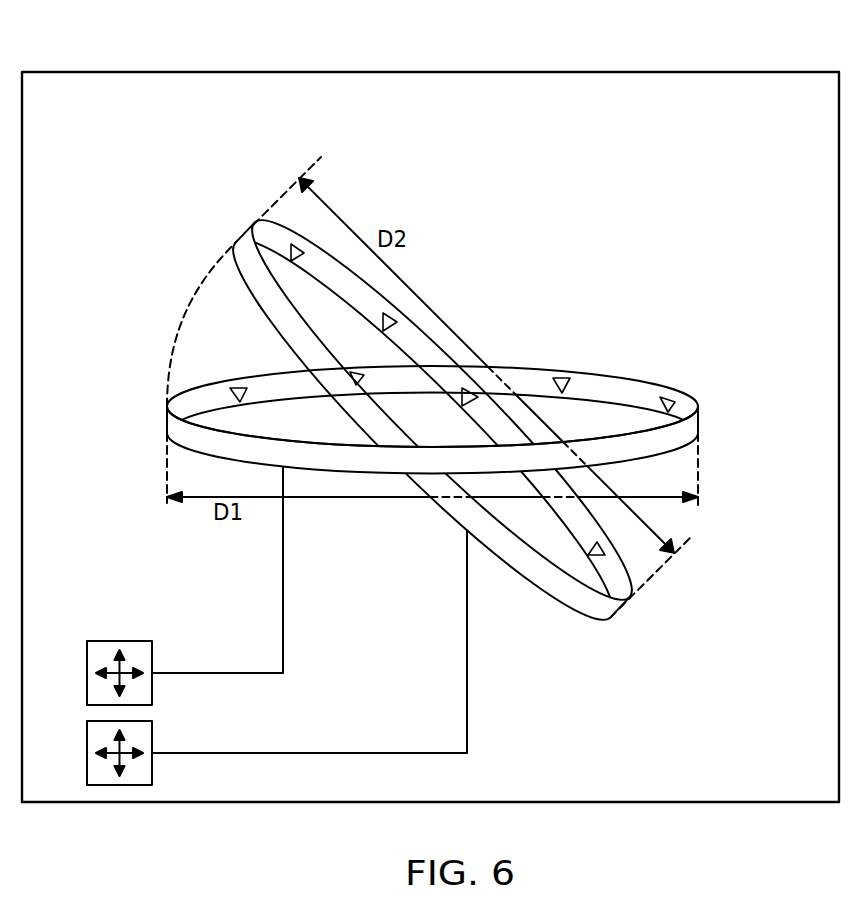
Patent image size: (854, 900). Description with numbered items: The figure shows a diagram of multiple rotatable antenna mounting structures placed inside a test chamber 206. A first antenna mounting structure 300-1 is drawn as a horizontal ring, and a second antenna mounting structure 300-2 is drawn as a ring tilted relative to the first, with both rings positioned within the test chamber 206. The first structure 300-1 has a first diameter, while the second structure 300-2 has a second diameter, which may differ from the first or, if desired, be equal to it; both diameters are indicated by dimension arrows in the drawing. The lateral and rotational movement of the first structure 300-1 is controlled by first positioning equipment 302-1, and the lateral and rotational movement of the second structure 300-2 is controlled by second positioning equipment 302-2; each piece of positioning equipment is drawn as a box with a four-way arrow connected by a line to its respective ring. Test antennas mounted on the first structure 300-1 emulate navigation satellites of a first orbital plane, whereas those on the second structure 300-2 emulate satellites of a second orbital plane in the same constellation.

The test chamber 206 is at (707, 73).
The first antenna mounting structure 300-1 is at (681, 403).
The second antenna mounting structure 300-2 is at (606, 608).
The first positioning equipment 302-1 is at (110, 641).
The second positioning equipment 302-2 is at (153, 768).